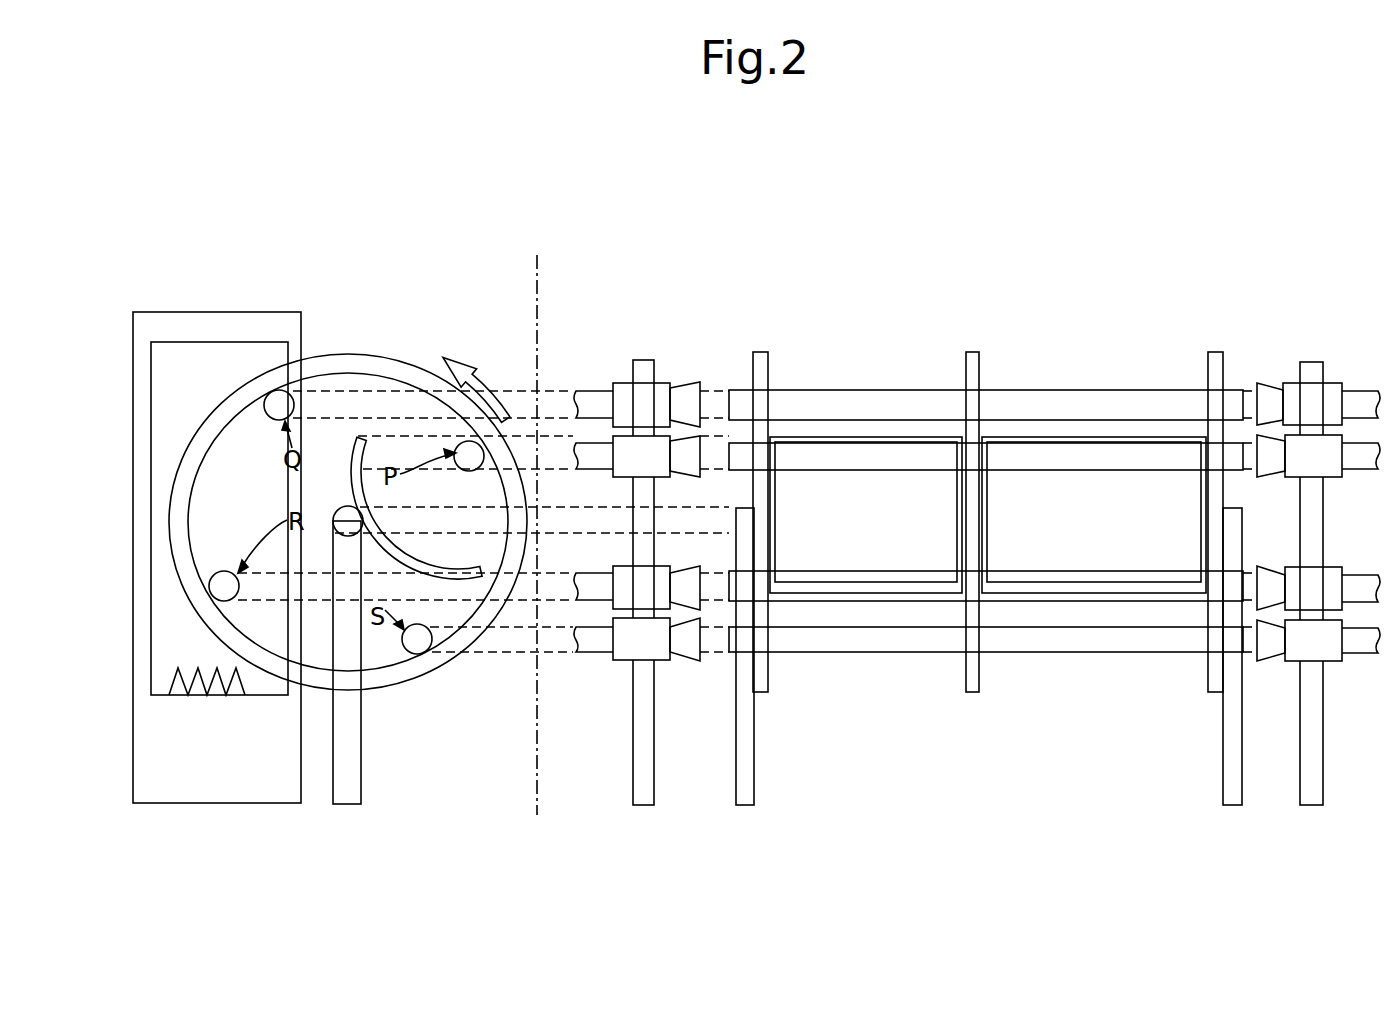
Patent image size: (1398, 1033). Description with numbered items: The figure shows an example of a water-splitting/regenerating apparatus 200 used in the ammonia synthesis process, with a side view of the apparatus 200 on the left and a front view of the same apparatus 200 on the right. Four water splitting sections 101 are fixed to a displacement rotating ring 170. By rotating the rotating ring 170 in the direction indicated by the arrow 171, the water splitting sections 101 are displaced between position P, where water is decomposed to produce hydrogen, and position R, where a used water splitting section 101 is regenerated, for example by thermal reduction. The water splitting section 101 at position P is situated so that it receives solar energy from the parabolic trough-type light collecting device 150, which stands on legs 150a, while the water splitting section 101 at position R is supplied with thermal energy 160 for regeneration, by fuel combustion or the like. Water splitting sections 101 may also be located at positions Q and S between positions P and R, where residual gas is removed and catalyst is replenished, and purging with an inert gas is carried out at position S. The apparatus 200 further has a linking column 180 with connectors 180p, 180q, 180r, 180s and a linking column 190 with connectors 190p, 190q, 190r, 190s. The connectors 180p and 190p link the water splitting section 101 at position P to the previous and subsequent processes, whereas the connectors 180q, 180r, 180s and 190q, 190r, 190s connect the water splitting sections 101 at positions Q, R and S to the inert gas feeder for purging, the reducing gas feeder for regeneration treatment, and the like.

The water splitting section 101 is at (280, 390).
The parabolic trough-type light collecting device 150 is at (352, 430).
The legs 150a is at (355, 787).
The thermal energy 160 is at (204, 658).
The displacement rotating ring 170 is at (358, 355).
The arrow 171 is at (492, 345).
The linking column 180 is at (645, 360).
The connector 180q is at (664, 392).
The connector 180p is at (667, 455).
The connector 180r is at (618, 583).
The connector 180s is at (622, 650).
The linking column 190 is at (1310, 372).
The connector 190q is at (1328, 398).
The connector 190p is at (1328, 460).
The connector 190r is at (1328, 585).
The connector 190s is at (1328, 648).
The water-splitting/regenerating apparatus 200 is at (380, 235).